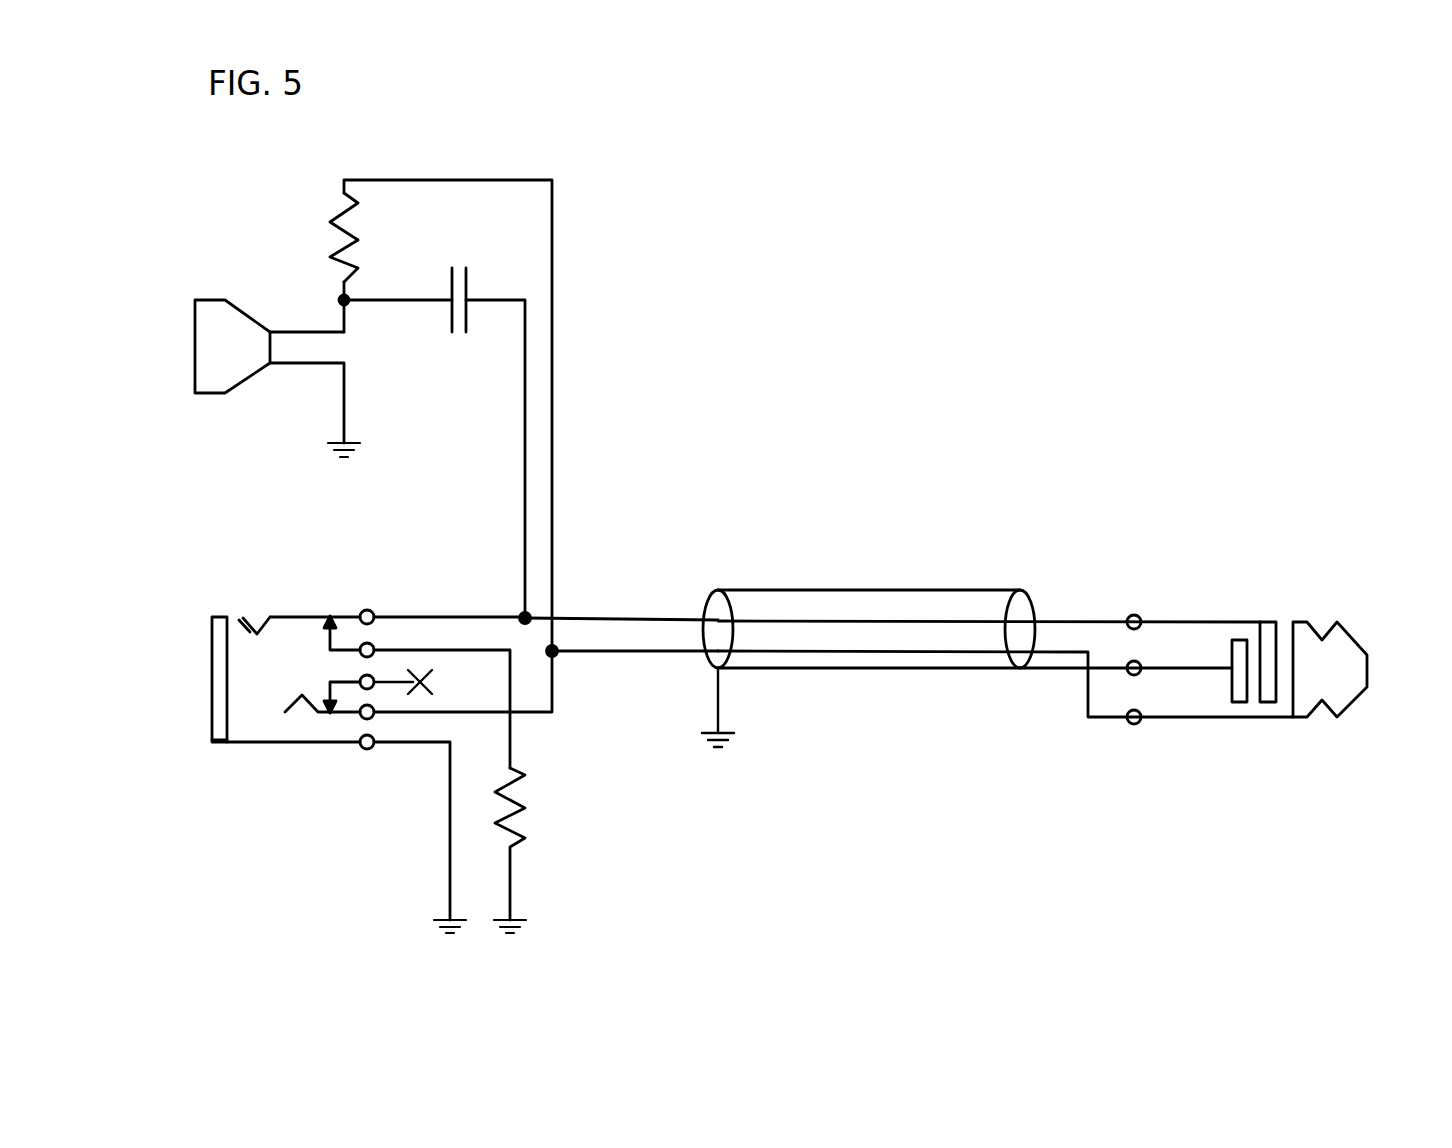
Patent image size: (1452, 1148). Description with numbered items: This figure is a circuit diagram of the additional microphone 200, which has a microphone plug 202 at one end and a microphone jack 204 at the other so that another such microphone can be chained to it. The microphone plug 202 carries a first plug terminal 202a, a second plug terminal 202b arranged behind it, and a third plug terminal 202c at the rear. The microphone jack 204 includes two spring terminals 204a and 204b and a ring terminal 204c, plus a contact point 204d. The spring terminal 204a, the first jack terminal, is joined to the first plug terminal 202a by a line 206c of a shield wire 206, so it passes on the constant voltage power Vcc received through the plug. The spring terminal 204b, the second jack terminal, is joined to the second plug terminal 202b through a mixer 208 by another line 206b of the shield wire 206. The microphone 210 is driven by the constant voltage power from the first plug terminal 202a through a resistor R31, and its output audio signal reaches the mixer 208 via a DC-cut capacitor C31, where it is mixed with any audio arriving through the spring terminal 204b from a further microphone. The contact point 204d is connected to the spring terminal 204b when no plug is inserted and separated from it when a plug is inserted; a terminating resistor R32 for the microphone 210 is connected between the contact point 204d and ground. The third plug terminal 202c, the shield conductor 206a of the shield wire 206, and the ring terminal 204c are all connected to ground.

The additional microphone 200 is at (845, 203).
The microphone plug 202 is at (1291, 625).
The first plug terminal 202a is at (1338, 656).
The second plug terminal 202b is at (1262, 630).
The third plug terminal 202c is at (1232, 658).
The microphone jack 204 is at (345, 738).
The spring terminal 204a is at (330, 716).
The spring terminal 204b is at (256, 633).
The ring terminal 204c is at (222, 745).
The contact point 204d is at (345, 648).
The shield wire 206 is at (997, 607).
The shield conductor 206a is at (935, 595).
The line 206b is at (765, 621).
The line 206c is at (912, 653).
The mixer 208 is at (528, 620).
The microphone 210 is at (213, 299).
The resistor R31 is at (343, 262).
The DC-cut capacitor C31 is at (468, 290).
The terminating resistor R32 is at (525, 808).